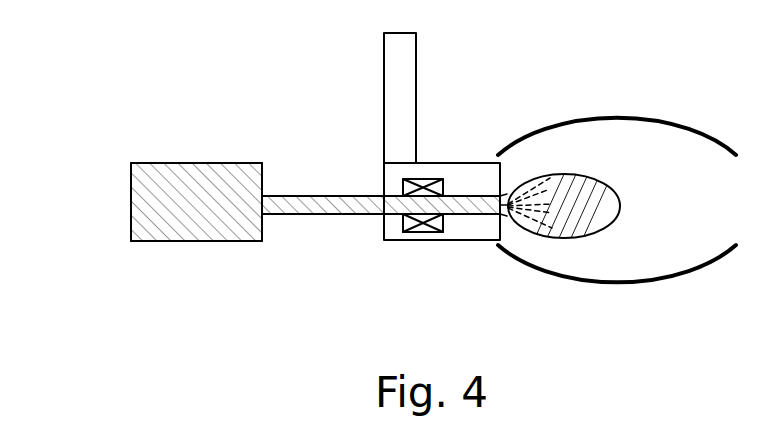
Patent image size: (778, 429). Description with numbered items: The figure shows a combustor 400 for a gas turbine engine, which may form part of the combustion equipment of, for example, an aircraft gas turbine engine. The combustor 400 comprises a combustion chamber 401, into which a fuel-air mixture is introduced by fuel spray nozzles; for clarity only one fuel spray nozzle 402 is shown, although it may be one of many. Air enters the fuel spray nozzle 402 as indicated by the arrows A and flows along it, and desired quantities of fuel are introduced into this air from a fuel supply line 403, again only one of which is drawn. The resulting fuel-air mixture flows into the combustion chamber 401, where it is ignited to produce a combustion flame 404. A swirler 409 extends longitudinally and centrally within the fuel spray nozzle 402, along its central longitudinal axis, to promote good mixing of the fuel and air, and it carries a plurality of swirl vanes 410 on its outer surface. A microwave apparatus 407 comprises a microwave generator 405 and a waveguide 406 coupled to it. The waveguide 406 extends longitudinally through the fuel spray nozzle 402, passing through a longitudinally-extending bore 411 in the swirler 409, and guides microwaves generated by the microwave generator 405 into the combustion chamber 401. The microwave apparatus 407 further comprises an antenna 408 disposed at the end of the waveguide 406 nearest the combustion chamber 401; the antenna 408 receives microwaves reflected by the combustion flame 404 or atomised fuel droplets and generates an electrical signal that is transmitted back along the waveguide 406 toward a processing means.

The combustor 400 is at (597, 80).
The combustion chamber 401 is at (653, 117).
The fuel spray nozzle 402 is at (487, 240).
The fuel supply line 403 is at (393, 90).
The combustion flame 404 is at (587, 207).
The microwave generator 405 is at (137, 229).
The waveguide 406 is at (295, 197).
The microwave apparatus 407 is at (137, 178).
The antenna 408 is at (505, 172).
The swirler 409 is at (427, 179).
The swirl vanes 410 is at (428, 233).
The longitudinally-extending bore 411 is at (410, 231).